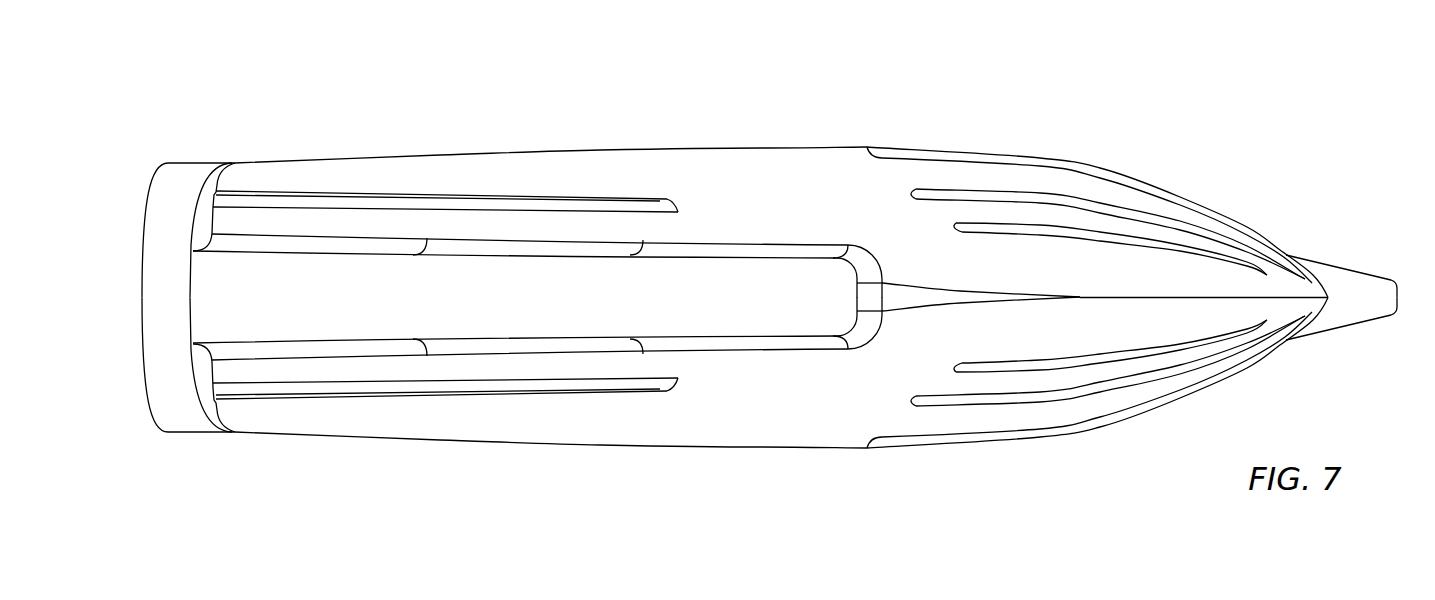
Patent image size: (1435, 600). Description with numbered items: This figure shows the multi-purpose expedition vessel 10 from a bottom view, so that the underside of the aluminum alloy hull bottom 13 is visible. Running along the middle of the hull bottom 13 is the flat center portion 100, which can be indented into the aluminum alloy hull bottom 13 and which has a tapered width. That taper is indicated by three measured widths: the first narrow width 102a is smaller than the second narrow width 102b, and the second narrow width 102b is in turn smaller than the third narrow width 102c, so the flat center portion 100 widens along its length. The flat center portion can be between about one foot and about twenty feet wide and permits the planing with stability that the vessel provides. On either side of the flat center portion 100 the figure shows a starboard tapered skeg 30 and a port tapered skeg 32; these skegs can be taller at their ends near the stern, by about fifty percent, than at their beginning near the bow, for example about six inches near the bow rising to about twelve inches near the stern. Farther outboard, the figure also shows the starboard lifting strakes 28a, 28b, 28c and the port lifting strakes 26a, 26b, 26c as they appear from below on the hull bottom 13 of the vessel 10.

The multi-purpose expedition vessel 10 is at (1152, 93).
The aluminum alloy hull bottom 13 is at (810, 182).
The port lifting strake 26a is at (928, 443).
The port lifting strake 26b is at (1022, 398).
The port lifting strake 26c is at (1110, 362).
The starboard lifting strake 28a is at (928, 152).
The starboard lifting strake 28b is at (1020, 197).
The starboard lifting strake 28c is at (1108, 235).
The starboard tapered skeg 30 is at (288, 198).
The port tapered skeg 32 is at (288, 388).
The flat center portion 100 is at (775, 310).
The first narrow width 102a is at (707, 257).
The second narrow width 102b is at (498, 256).
The third narrow width 102c is at (249, 254).